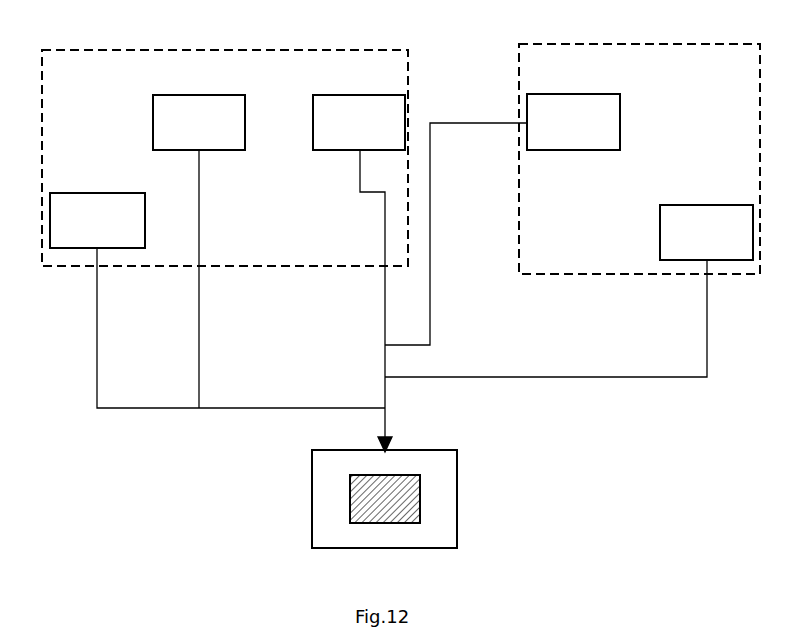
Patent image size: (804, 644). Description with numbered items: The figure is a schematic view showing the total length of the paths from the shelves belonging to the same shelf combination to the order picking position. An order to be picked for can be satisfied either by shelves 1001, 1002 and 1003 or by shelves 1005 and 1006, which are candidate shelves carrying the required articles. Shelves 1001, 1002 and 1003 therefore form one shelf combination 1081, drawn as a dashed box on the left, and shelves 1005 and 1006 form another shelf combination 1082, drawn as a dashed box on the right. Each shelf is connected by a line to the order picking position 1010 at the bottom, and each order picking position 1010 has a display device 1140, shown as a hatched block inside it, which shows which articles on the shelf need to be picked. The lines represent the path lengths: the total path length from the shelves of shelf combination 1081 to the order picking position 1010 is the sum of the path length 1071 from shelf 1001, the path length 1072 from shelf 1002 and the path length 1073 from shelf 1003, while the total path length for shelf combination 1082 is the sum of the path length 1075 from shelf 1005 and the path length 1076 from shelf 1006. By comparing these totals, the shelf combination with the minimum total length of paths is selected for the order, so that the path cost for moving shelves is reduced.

The shelf combination 1081 is at (118, 52).
The shelf combination 1082 is at (712, 50).
The shelf 1001 is at (54, 193).
The shelf 1002 is at (162, 106).
The shelf 1003 is at (314, 95).
The shelf 1005 is at (597, 94).
The shelf 1006 is at (673, 205).
The path length 1071 is at (201, 328).
The path length 1072 is at (237, 279).
The path length 1073 is at (358, 301).
The path length 1075 is at (458, 234).
The path length 1076 is at (546, 318).
The order picking position 1010 is at (437, 450).
The display device 1140 is at (420, 492).